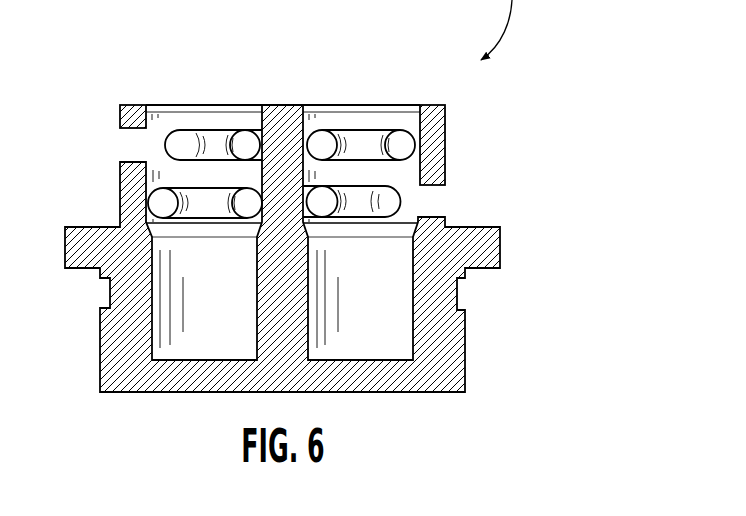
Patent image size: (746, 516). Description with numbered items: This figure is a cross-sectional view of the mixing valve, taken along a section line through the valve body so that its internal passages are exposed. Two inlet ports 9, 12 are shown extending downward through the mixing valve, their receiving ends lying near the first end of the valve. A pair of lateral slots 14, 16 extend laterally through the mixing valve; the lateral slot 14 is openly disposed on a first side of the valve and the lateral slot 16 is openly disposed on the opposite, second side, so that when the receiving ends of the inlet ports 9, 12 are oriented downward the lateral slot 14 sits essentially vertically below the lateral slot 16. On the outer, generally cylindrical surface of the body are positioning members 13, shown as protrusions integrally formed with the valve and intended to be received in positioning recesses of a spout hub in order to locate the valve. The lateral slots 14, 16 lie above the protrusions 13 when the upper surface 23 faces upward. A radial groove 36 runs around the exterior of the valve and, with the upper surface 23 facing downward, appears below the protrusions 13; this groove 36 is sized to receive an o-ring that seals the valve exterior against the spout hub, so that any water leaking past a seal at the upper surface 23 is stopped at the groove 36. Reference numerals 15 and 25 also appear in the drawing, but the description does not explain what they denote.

The inlet port 9 is at (363, 82).
The inlet port 12 is at (200, 97).
The positioning member 13 is at (65, 252).
The lateral slot 14 is at (128, 134).
The side wall 15 is at (119, 195).
The lateral slot 16 is at (428, 187).
The upper surface 23 is at (130, 392).
The element 25 is at (35, 0).
The radial groove 36 is at (110, 298).